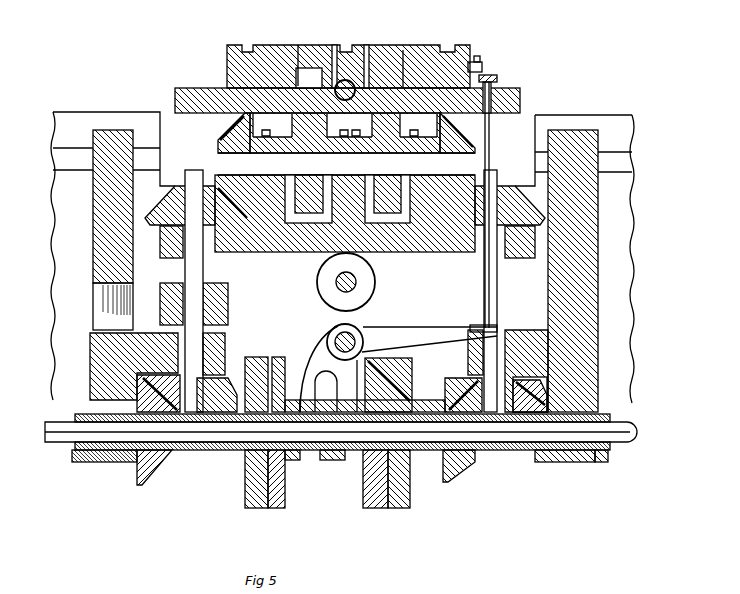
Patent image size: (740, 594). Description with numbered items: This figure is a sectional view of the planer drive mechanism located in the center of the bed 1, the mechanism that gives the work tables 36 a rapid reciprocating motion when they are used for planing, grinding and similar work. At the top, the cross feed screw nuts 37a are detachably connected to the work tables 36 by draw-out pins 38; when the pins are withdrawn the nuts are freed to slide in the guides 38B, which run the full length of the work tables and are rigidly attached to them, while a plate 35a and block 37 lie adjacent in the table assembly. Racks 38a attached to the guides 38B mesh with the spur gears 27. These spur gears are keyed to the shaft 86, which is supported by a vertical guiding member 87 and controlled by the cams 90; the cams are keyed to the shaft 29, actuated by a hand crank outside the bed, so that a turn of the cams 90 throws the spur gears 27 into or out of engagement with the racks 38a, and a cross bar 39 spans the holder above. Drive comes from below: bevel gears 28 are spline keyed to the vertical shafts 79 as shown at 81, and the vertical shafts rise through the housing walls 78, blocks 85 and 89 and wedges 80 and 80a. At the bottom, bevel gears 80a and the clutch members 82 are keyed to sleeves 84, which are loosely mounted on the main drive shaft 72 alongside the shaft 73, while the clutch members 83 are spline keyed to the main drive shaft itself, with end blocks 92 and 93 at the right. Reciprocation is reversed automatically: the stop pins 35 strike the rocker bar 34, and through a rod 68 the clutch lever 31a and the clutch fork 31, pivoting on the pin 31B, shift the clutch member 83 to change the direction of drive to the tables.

The machine frame 1 is at (634, 272).
The spur gears 27 is at (296, 124).
The bevel gears 28 is at (160, 208).
The shaft 29 is at (522, 186).
The clutch fork 31 is at (312, 352).
The clutch lever 31a is at (399, 334).
The lever pivot pin 31B is at (363, 340).
The rocker bar 34 is at (497, 79).
The stop pins 35 is at (482, 68).
The plate 35a is at (403, 50).
The work tables 36 is at (438, 45).
The cone 37 is at (340, 105).
The cross feed screw nuts 37a is at (340, 126).
The draw-out pins 38 is at (335, 45).
The racks 38a is at (298, 45).
The guides 38B is at (309, 86).
The cross bar 39 is at (520, 96).
The rod 68 is at (492, 128).
The main drive shaft 72 is at (217, 450).
The shaft 73 is at (197, 442).
The housing wall 78 is at (93, 218).
The vertical shafts 79 is at (200, 272).
The wedge block 80 is at (223, 380).
The bevel gears 80a is at (447, 390).
The spline key connection 81 is at (172, 258).
The clutch members 82 is at (254, 508).
The clutch members 83 is at (276, 508).
The sleeves 84 is at (176, 450).
The spur gear 85 is at (228, 297).
The shaft 86 is at (226, 162).
The vertical guiding member 87 is at (345, 222).
The block 89 is at (462, 378).
The cams 90 is at (375, 268).
The block 92 is at (540, 462).
The block 93 is at (603, 462).